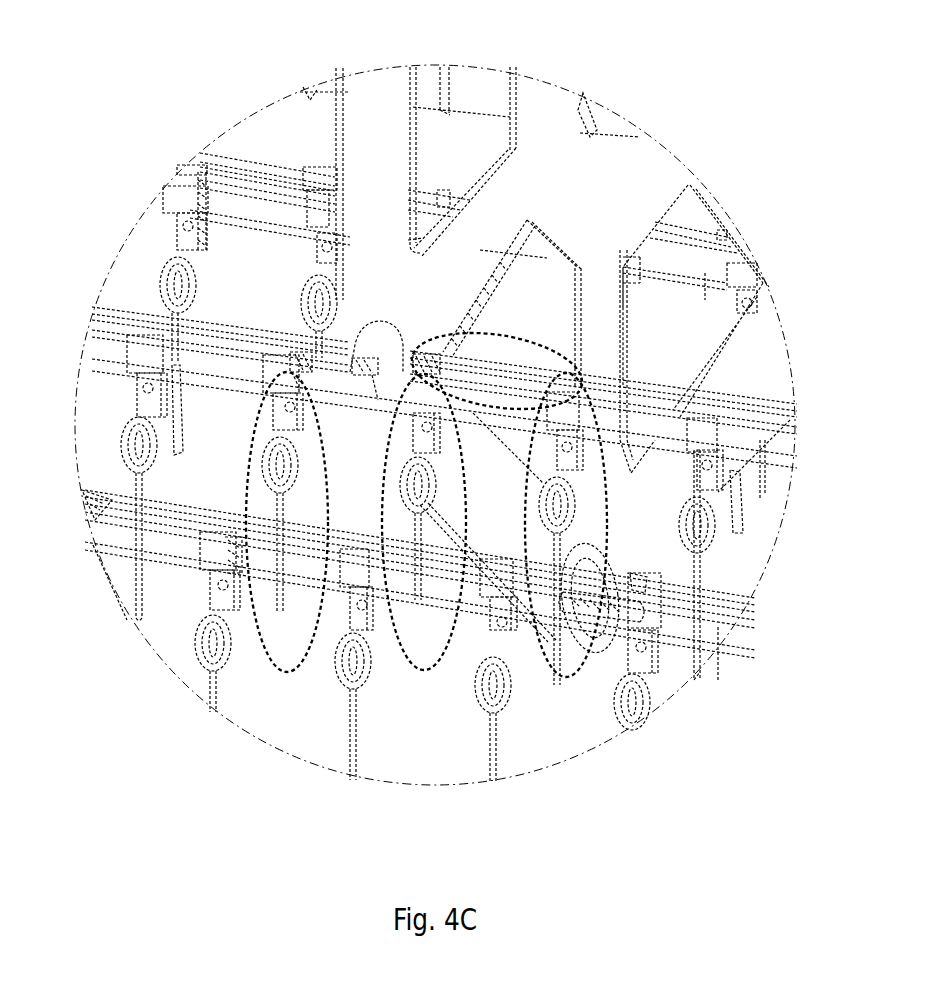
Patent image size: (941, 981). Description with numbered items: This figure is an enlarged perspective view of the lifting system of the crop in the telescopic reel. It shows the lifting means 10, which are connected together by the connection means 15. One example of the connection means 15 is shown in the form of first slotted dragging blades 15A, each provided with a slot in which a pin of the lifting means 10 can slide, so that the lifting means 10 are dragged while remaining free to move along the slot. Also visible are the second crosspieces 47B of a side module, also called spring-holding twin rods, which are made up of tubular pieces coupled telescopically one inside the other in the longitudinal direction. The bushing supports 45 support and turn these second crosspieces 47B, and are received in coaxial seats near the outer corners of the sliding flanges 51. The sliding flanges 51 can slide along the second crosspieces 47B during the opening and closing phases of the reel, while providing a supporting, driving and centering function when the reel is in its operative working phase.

The lifting means 10 is at (284, 673).
The connection means 15 is at (505, 338).
The first slotted dragging blades 15A is at (302, 372).
The bushing supports 45 is at (391, 349).
The second crosspieces 47B is at (706, 273).
The sliding flanges 51 is at (367, 143).